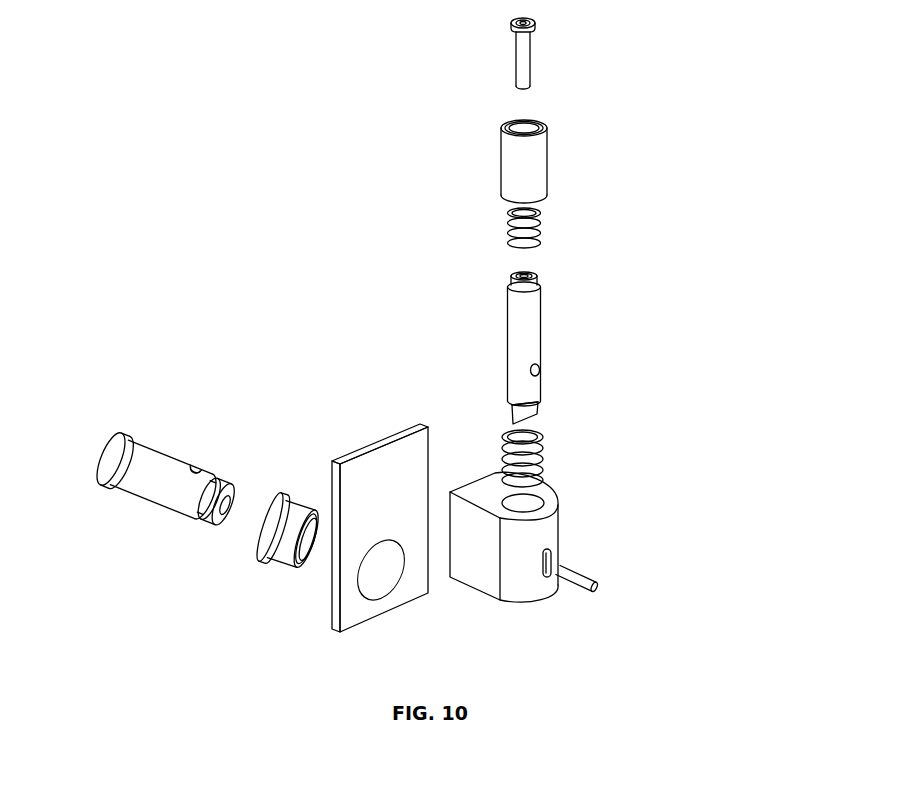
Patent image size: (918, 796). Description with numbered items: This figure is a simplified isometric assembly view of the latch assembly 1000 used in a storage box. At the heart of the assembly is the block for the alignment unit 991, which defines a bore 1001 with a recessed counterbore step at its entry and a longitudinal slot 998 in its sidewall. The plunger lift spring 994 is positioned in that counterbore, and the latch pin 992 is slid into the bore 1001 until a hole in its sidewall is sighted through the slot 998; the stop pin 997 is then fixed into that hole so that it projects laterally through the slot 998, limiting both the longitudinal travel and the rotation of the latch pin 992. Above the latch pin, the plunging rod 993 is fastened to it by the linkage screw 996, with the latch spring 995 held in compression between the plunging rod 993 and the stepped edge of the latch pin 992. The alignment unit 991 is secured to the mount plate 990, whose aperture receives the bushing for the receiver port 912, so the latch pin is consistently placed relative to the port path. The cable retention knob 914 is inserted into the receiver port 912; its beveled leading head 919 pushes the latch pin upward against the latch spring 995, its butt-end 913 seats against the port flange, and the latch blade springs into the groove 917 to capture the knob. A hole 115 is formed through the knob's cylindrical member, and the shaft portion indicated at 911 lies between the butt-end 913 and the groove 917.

The latch assembly 1000 is at (411, 341).
The linkage screw 996 is at (531, 50).
The plunging rod 993 is at (547, 168).
The latch spring 995 is at (507, 220).
The latch pin 992 is at (540, 330).
The plunger lift spring 994 is at (542, 455).
The alignment unit block 991 is at (551, 553).
The bore 1001 is at (510, 502).
The longitudinal slot 998 is at (547, 580).
The stop pin 997 is at (578, 590).
The mount plate 990 is at (403, 428).
The receiver port 912 is at (283, 563).
The cable retention knob 914 is at (174, 471).
The butt-end 913 is at (110, 487).
The pin shaft 911 is at (157, 526).
The hole 115 is at (203, 466).
The leading head 919 is at (217, 548).
The groove 917 is at (233, 465).